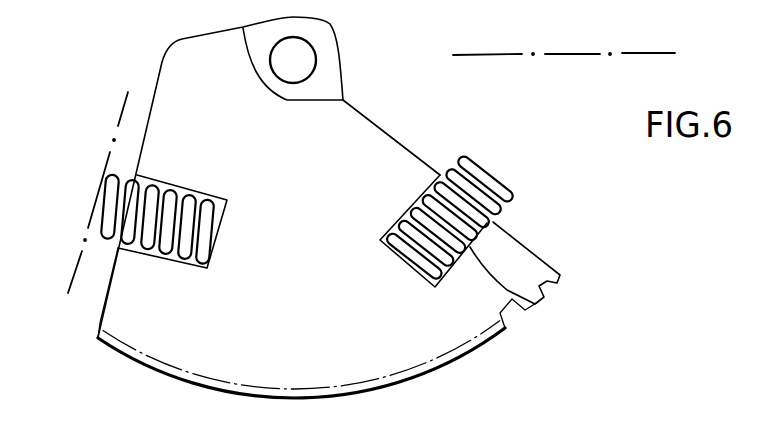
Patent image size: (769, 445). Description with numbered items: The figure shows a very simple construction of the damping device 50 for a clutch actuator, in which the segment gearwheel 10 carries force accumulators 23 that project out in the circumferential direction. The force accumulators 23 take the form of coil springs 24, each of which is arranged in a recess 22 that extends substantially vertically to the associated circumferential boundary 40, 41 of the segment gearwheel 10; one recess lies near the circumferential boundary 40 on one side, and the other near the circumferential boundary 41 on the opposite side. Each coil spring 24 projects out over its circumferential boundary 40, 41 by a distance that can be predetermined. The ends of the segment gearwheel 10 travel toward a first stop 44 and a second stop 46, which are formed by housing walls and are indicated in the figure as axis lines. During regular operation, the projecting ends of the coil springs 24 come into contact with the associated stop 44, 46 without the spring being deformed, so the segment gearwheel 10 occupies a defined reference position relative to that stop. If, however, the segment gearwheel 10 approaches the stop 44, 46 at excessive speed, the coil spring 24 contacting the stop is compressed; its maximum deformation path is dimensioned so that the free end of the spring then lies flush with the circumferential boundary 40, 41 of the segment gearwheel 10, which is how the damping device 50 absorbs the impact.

The segment gearwheel 10 is at (168, 332).
The recess 22 is at (182, 183).
The force accumulator 23 is at (165, 243).
The coil spring 24 is at (213, 257).
The circumferential boundary 40 is at (107, 293).
The circumferential boundary 41 is at (545, 258).
The first stop 44 is at (118, 106).
The second stop 46 is at (545, 52).
The damping device 50 is at (545, 236).